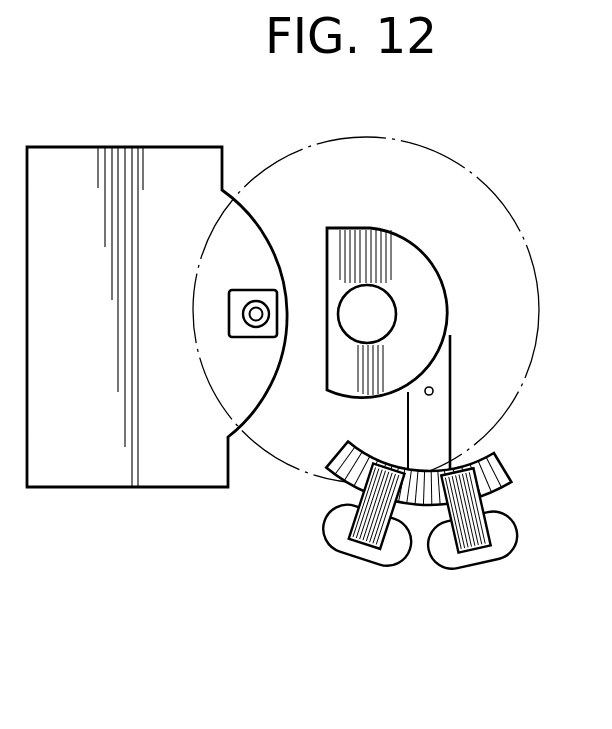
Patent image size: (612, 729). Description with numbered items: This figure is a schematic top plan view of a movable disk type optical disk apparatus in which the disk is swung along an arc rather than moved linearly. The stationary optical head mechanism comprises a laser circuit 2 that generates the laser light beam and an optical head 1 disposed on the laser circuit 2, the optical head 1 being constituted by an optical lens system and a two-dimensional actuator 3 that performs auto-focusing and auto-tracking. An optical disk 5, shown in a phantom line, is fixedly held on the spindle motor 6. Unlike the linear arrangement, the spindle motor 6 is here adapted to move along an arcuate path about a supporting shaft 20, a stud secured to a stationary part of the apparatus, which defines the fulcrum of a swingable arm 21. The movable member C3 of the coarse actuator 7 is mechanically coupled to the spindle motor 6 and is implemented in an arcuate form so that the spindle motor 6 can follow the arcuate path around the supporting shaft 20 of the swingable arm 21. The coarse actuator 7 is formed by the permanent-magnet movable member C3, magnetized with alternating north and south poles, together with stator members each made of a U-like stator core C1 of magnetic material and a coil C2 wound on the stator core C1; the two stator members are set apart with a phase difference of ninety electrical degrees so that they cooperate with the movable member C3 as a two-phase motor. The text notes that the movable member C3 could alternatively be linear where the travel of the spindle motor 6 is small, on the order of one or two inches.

The optical head 1 is at (252, 303).
The laser circuit 2 is at (162, 162).
The two-dimensional actuator 3 is at (248, 337).
The optical disk 5 is at (498, 197).
The spindle motor 6 is at (440, 288).
The coarse actuator 7 is at (466, 574).
The supporting shaft 20 is at (434, 391).
The swingable arm 21 is at (440, 425).
The stator core C1 is at (365, 542).
The coil C2 is at (393, 562).
The movable member C3 is at (498, 478).